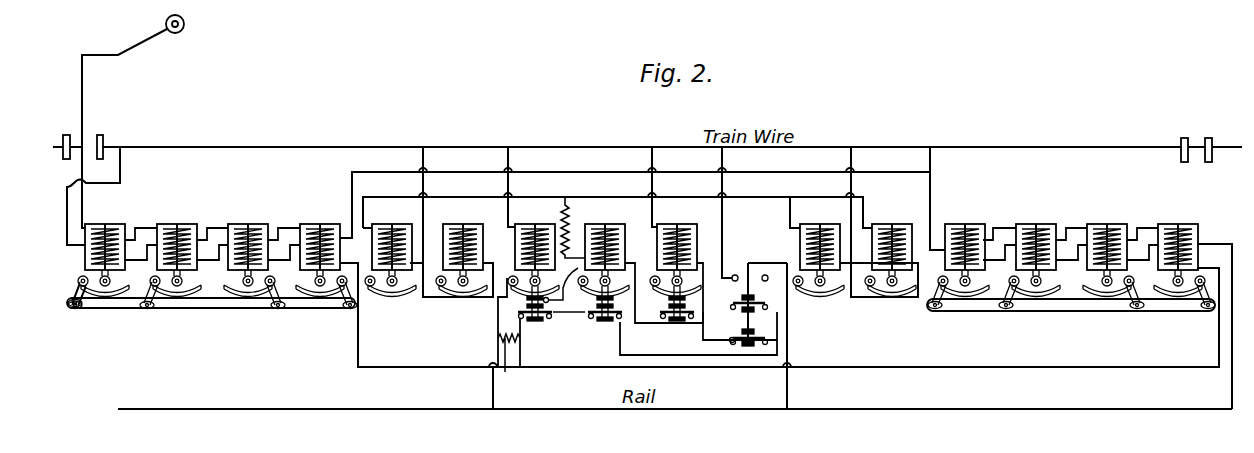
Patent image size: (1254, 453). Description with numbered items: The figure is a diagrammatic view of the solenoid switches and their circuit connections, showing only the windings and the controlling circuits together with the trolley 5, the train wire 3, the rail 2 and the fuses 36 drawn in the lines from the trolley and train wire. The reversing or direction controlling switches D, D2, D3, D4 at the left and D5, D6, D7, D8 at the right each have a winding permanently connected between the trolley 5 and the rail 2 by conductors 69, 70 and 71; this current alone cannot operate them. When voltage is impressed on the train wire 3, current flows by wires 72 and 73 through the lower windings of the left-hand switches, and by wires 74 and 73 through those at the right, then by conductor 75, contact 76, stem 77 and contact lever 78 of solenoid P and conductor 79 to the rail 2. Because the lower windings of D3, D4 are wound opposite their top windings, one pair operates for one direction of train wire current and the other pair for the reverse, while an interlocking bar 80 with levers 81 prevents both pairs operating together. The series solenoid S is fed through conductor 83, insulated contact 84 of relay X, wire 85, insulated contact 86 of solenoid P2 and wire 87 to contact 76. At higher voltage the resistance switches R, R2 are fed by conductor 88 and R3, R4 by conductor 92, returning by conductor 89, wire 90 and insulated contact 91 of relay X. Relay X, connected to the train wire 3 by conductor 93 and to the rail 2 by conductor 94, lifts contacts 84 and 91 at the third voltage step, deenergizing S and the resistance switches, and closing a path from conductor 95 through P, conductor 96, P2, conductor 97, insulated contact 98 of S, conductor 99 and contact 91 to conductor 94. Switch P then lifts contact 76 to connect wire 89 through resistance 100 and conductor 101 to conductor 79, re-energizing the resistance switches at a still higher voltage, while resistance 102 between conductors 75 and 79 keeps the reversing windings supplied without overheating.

The rail 2 is at (452, 409).
The train wire 3 is at (610, 147).
The trolley 5 is at (161, 31).
The fuses 36 is at (66, 135).
The conductor 69 is at (83, 108).
The conductor 70 is at (635, 197).
The conductor 71 is at (1232, 395).
The wire 72 is at (66, 190).
The wire 73 is at (404, 366).
The wire 74 is at (933, 166).
The conductor 75 is at (521, 357).
The non-insulated contact 76 is at (545, 322).
The stem 77 is at (497, 338).
The contact lever 78 is at (498, 297).
The conductor 79 is at (498, 322).
The bar 80 is at (218, 307).
The levers 81 is at (143, 292).
The conductor 83 is at (740, 320).
The insulated contact 84 is at (770, 338).
The wire 85 is at (698, 333).
The insulated contact 86 is at (628, 268).
The wire 87 is at (654, 190).
The conductor 88 is at (425, 165).
The conductor 89 is at (572, 197).
The wire 90 is at (718, 276).
The insulated contact 91 is at (766, 282).
The conductor 92 is at (853, 191).
The conductor 93 is at (724, 190).
The conductor 94 is at (788, 331).
The conductor 95 is at (510, 190).
The conductor 96 is at (562, 285).
The conductor 97 is at (636, 300).
The insulated contact 98 is at (703, 330).
The conductor 99 is at (740, 303).
The resistance 100 is at (569, 216).
The conductor 101 is at (569, 320).
The resistance 102 is at (513, 388).
The reversing switch D is at (112, 255).
The reversing switch D2 is at (184, 254).
The reversing switch D3 is at (262, 254).
The reversing switch D4 is at (326, 254).
The reversing switch D5 is at (972, 254).
The reversing switch D6 is at (1043, 254).
The reversing switch D7 is at (1120, 254).
The reversing switch D8 is at (1184, 254).
The resistance switch R is at (390, 249).
The resistance switch R2 is at (461, 248).
The resistance switch R3 is at (818, 248).
The resistance switch R4 is at (890, 248).
The paralleling switch P is at (533, 261).
The paralleling switch P2 is at (603, 260).
The series solenoid S is at (675, 261).
The relay X is at (776, 230).